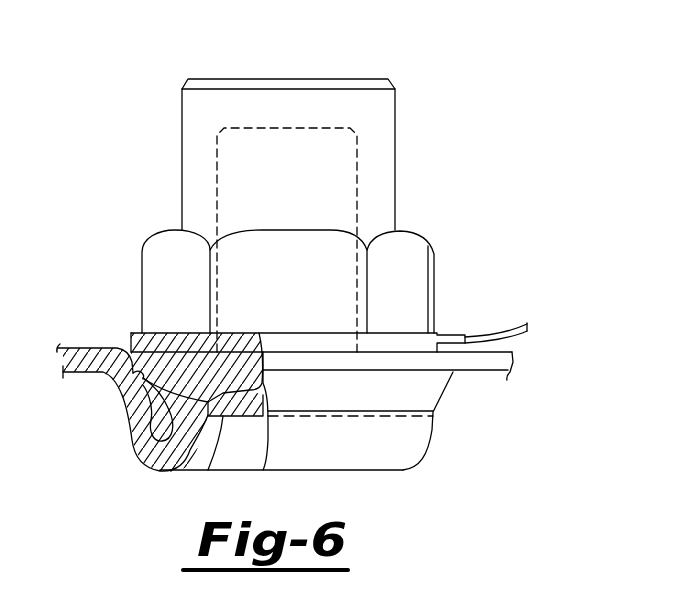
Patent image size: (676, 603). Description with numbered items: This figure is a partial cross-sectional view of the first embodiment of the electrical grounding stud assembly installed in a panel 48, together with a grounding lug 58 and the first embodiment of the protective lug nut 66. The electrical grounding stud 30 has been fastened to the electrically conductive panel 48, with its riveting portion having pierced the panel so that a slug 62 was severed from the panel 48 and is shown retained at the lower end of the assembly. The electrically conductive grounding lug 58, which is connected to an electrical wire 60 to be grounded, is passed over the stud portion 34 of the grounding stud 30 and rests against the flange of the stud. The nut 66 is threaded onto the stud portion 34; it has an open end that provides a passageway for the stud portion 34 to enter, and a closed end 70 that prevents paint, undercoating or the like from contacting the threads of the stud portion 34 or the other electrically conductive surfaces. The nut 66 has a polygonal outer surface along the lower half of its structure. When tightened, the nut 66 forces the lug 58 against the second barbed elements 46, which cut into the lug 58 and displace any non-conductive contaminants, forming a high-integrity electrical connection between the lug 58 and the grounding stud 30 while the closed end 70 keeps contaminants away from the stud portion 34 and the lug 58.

The closed end 70 is at (298, 76).
The nut 66 is at (407, 142).
The stud portion 34 is at (386, 190).
The second barbed elements 46 is at (237, 342).
The electrical grounding stud 30 is at (182, 369).
The grounding lug 58 is at (406, 343).
The electrical wire 60 is at (497, 333).
The panel 48 is at (428, 365).
The slug 62 is at (208, 470).